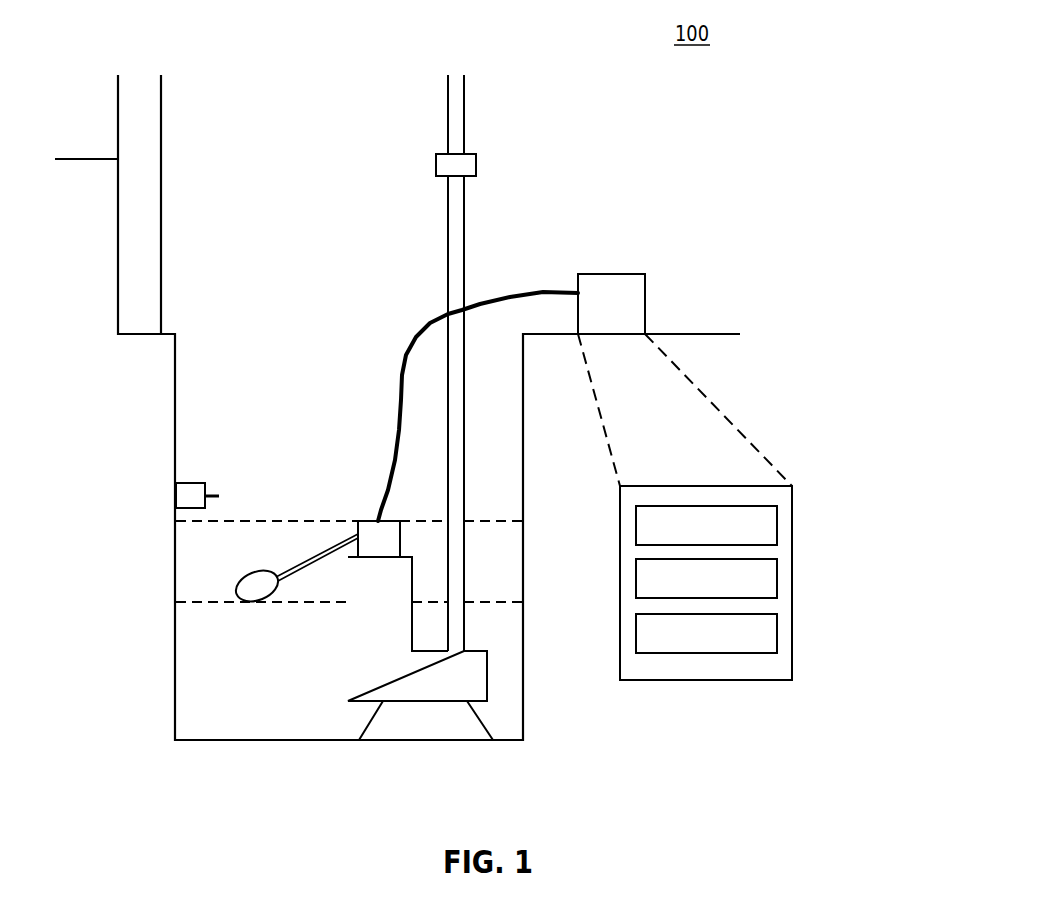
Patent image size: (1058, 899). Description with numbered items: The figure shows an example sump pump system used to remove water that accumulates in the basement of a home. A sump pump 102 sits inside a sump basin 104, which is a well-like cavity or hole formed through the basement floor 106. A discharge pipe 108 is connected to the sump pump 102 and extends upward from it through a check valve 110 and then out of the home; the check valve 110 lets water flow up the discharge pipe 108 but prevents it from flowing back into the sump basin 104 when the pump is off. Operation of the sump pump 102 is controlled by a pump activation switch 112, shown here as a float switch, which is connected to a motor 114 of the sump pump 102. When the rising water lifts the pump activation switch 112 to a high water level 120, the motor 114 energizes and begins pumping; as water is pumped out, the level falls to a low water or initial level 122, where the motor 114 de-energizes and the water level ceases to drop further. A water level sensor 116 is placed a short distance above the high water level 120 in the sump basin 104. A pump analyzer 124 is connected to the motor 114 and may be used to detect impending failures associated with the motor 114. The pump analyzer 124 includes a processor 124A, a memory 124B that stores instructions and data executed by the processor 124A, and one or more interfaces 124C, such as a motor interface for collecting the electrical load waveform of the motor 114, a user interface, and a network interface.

The sump pump 102 is at (430, 685).
The sump basin 104 is at (257, 337).
The basement floor 106 is at (717, 333).
The discharge pipe 108 is at (448, 245).
The check valve 110 is at (436, 166).
The pump activation switch 112 is at (256, 586).
The motor 114 is at (367, 519).
The water level sensor 116 is at (180, 495).
The high water level 120 is at (371, 521).
The initial level 122 is at (371, 603).
The pump analyzer 124 is at (626, 274).
The processor 124A is at (777, 524).
The memory 124B is at (777, 577).
The interfaces 124C is at (777, 630).